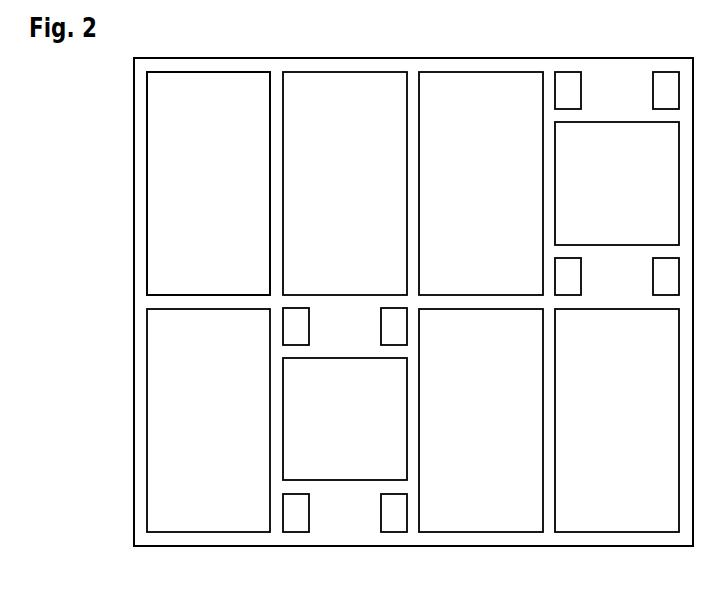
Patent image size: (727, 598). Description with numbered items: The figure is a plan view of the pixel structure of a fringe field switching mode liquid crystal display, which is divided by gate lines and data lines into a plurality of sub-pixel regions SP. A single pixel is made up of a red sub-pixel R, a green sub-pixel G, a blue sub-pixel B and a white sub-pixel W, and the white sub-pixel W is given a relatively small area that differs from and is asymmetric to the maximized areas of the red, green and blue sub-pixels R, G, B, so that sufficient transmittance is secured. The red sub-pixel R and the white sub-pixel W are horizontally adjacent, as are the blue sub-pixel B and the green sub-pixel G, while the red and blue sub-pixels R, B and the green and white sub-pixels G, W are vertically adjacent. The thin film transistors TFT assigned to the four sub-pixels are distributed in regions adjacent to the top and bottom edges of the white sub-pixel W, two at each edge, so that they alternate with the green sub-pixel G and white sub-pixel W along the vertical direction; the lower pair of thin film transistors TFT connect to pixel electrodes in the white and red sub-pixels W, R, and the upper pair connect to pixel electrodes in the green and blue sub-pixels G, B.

The sub-pixel region SP is at (137, 136).
The thin film transistor TFT is at (296, 538).
The red sub-pixel R is at (345, 302).
The green sub-pixel G is at (481, 302).
The blue sub-pixel B is at (345, 302).
The white sub-pixel W is at (481, 301).